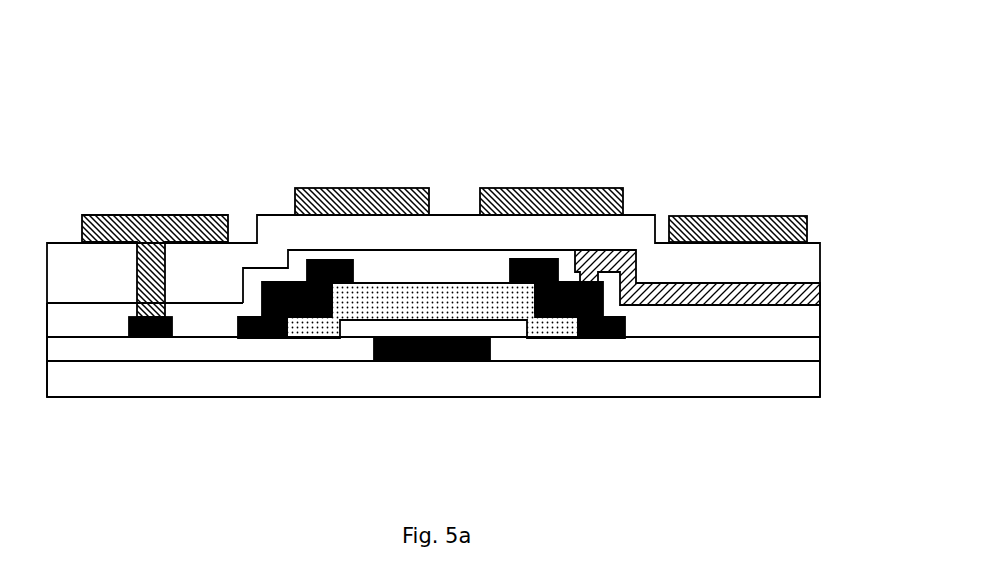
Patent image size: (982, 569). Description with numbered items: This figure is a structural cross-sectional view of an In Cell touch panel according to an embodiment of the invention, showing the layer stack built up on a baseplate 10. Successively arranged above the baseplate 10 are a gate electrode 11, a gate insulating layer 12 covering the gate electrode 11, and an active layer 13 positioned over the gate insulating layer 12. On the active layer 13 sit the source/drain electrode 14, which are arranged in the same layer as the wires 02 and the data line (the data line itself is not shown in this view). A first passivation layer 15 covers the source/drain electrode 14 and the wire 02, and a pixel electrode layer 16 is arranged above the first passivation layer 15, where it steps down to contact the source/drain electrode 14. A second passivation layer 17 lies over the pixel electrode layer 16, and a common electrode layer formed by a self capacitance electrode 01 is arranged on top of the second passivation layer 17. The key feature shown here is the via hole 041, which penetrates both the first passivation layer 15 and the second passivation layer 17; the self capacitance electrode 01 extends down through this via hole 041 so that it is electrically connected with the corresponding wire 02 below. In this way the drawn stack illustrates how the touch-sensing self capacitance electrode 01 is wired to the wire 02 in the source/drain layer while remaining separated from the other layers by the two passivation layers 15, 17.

The baseplate 10 is at (658, 373).
The gate electrode 11 is at (426, 362).
The gate insulating layer 12 is at (544, 352).
The active layer 13 is at (365, 298).
The source/drain electrode 14 is at (523, 260).
The first passivation layer 15 is at (203, 322).
The pixel electrode layer 16 is at (622, 260).
The second passivation layer 17 is at (103, 280).
The self capacitance electrode 01 is at (103, 227).
The wire 02 is at (146, 338).
The via hole 041 is at (150, 298).